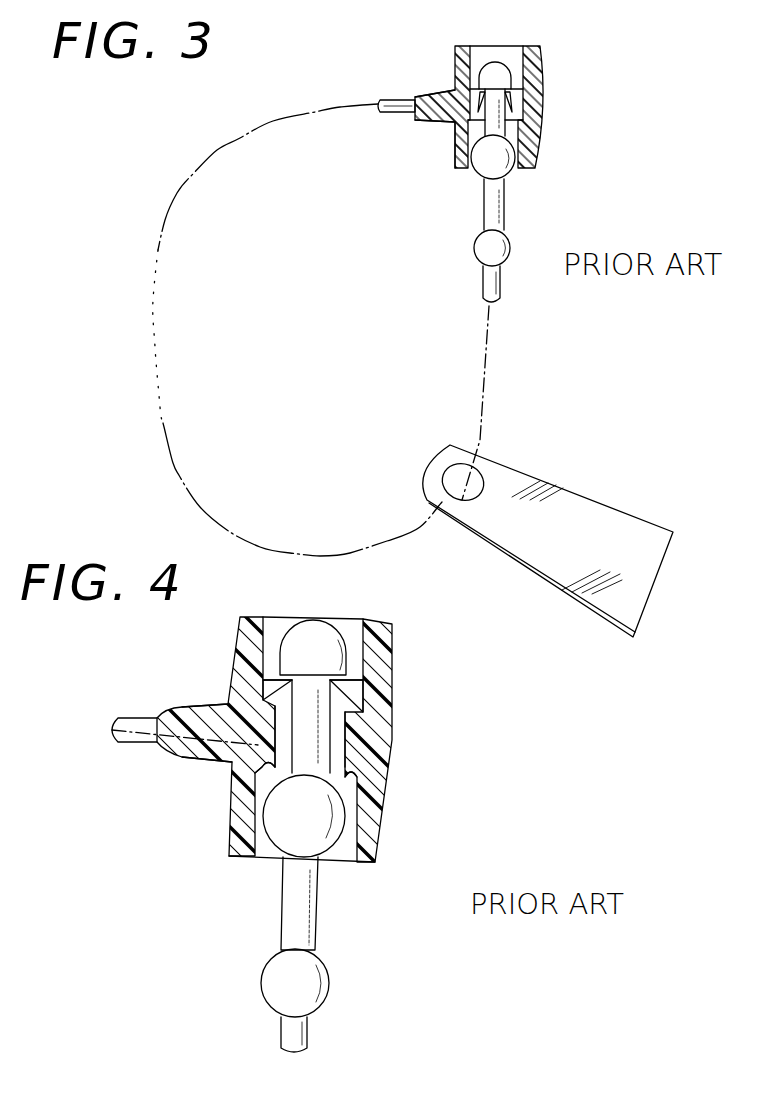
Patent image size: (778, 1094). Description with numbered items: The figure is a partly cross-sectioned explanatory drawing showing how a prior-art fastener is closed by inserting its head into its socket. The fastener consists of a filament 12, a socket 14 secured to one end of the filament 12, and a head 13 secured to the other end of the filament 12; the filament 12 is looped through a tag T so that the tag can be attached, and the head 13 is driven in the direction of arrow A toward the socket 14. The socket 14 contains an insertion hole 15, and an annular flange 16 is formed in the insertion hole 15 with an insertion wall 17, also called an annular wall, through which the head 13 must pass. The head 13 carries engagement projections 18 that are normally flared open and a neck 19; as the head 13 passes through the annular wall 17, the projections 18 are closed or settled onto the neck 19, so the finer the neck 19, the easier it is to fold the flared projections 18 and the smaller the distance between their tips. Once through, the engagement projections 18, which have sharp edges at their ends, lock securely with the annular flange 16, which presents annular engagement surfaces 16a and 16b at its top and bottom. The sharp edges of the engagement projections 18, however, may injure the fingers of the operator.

In FIG. 3, the filament 12 is at (165, 296).
In FIG. 4, the filament 12 is at (139, 757).
In FIG. 3, the head 13 is at (486, 69).
In FIG. 4, the head 13 is at (326, 629).
In FIG. 3, the socket 14 is at (548, 70).
In FIG. 4, the socket 14 is at (396, 646).
In FIG. 3, the insertion hole 15 is at (520, 152).
In FIG. 4, the insertion hole 15 is at (303, 913).
In FIG. 3, the annular flange 16 is at (458, 116).
In FIG. 4, the annular flange 16 is at (212, 760).
In FIG. 4, the annular engagement surface 16a is at (242, 700).
In FIG. 4, the annular engagement surface 16b is at (234, 776).
In FIG. 3, the insertion wall 17 is at (458, 152).
In FIG. 3, the engagement projection 18 is at (522, 105).
In FIG. 4, the engagement projection 18 is at (246, 661).
In FIG. 3, the neck 19 is at (504, 126).
In FIG. 3, the direction arrow A is at (469, 190).
In FIG. 3, the tag T is at (575, 500).